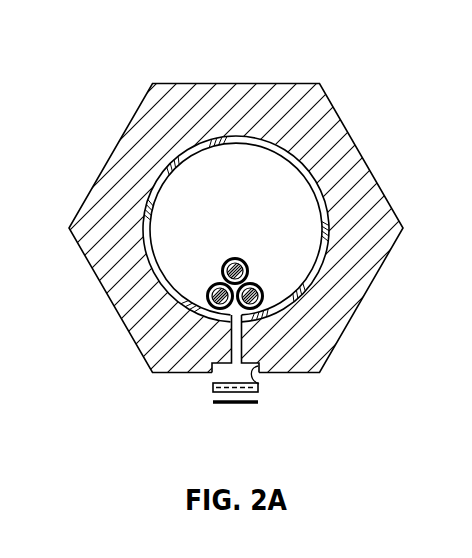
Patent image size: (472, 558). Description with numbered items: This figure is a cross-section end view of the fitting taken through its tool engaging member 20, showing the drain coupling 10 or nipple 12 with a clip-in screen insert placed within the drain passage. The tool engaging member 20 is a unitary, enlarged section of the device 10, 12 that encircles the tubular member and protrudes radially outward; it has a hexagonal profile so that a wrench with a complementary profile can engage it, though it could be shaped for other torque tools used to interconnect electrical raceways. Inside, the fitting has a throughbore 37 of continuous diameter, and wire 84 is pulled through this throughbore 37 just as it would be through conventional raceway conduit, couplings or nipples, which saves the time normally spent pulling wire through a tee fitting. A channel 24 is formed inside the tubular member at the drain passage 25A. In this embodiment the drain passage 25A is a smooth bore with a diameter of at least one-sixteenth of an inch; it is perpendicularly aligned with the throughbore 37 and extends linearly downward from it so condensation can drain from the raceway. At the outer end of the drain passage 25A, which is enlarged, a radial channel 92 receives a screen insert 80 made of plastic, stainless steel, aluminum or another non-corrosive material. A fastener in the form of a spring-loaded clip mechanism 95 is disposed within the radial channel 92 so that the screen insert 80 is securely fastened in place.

The drain coupling 10 is at (169, 43).
The nipple 12 is at (236, 246).
The tool engaging member 20 is at (121, 138).
The channel 24 is at (306, 292).
The throughbore 37 is at (267, 188).
The wire 84 is at (233, 258).
The drain passage 25A is at (231, 343).
The screen insert 80 is at (213, 387).
The radial channel 92 is at (259, 387).
The spring-loaded clip mechanism 95 is at (243, 403).